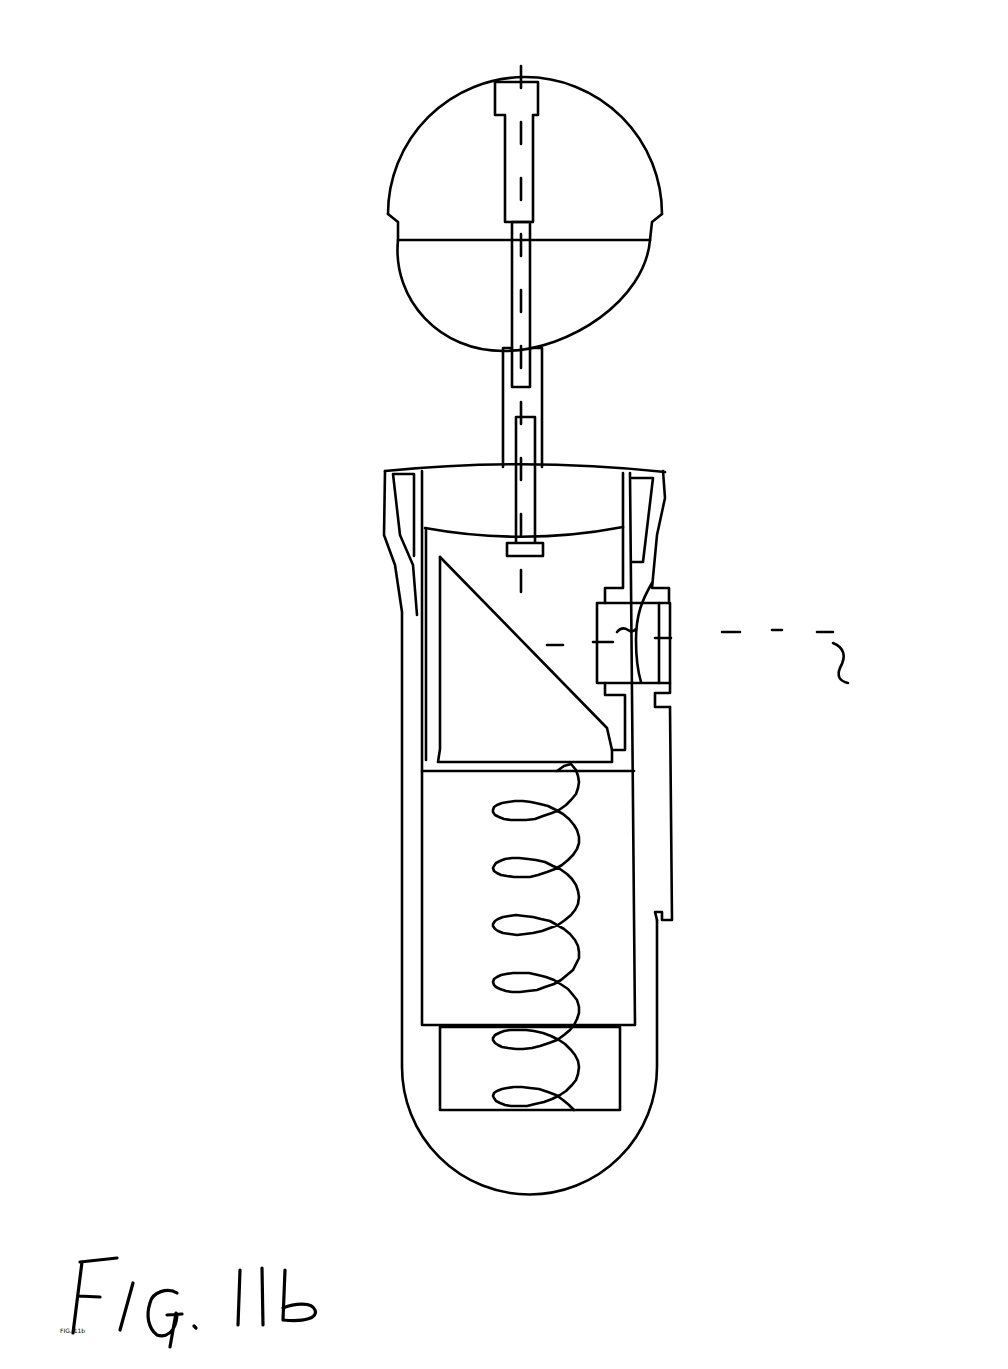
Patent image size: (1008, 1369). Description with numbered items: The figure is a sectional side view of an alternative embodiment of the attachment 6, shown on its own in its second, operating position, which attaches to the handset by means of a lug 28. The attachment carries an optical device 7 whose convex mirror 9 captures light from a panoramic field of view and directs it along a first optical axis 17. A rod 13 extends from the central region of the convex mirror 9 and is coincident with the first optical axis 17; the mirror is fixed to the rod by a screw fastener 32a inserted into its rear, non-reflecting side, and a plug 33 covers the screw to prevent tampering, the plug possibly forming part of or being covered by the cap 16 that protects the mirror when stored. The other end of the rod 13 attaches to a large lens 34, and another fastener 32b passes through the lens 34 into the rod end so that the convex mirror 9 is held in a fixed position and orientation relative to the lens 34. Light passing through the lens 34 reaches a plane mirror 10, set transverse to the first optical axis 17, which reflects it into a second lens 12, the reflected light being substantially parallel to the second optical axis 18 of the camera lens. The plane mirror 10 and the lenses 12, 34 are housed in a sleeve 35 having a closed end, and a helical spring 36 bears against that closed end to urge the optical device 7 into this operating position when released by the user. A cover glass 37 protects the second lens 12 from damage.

The attachment 6 is at (151, 628).
The optical device 7 is at (413, 550).
The convex mirror 9 is at (421, 310).
The plane mirror 10 is at (455, 677).
The second lens 12 is at (653, 592).
The rod 13 is at (502, 390).
The cap 16 is at (400, 142).
The first optical axis 17 is at (519, 36).
The second optical axis 18 is at (859, 675).
The lug 28 is at (671, 835).
The screw fastener 32a is at (517, 262).
The fastener 32b is at (502, 460).
The plug 33 is at (517, 88).
The lens 34 is at (577, 480).
The sleeve 35 is at (425, 760).
The helical spring 36 is at (493, 922).
The cover glass 37 is at (673, 652).